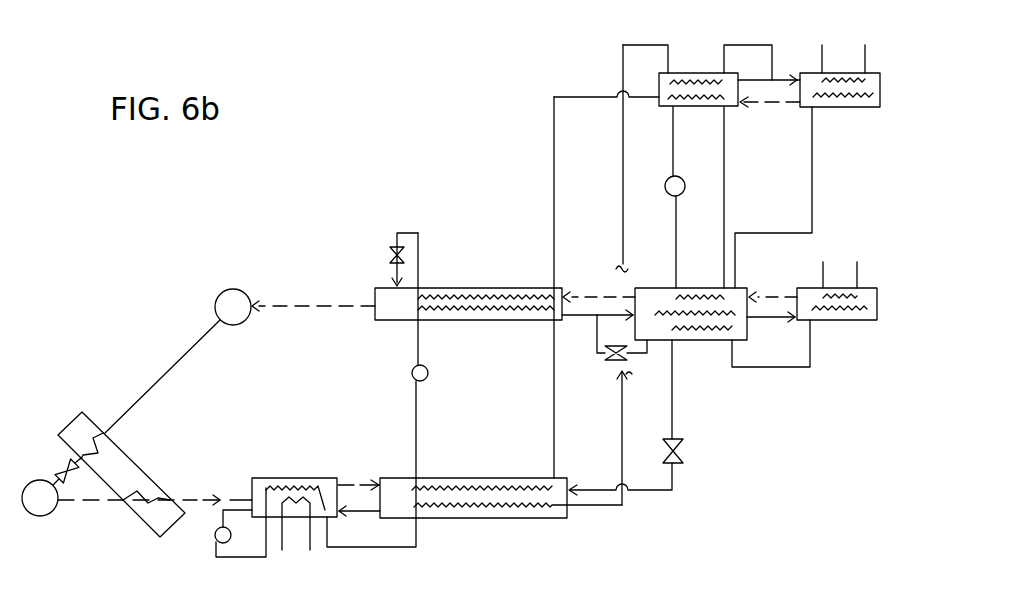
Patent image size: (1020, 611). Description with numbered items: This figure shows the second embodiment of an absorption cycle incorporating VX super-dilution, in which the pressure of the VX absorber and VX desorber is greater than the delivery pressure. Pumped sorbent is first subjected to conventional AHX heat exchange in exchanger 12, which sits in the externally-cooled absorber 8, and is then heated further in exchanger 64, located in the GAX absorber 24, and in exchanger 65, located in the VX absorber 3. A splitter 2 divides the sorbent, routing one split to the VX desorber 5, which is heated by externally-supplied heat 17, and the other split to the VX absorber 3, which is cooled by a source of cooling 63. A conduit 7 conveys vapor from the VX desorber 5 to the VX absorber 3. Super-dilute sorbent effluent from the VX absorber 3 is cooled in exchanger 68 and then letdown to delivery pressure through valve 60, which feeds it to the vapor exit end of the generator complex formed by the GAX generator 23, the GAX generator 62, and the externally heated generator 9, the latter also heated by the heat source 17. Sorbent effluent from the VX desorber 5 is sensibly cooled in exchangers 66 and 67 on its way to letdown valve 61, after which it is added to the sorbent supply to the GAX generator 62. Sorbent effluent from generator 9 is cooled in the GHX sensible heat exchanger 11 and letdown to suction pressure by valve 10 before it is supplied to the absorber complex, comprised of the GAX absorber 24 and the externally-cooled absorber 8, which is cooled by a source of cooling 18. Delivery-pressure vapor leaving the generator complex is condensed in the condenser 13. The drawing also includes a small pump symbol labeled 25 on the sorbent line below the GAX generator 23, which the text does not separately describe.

The splitter 2 is at (775, 81).
The VX absorber 3 is at (684, 107).
The VX desorber 5 is at (873, 107).
The conduit 7 is at (762, 103).
The externally-cooled absorber 8 is at (322, 478).
The externally heated generator 9 is at (863, 321).
The valve 10 is at (683, 440).
The GHX sensible heat exchanger 11 is at (843, 321).
The exchanger 12 is at (268, 485).
The condenser 13 is at (236, 290).
The externally-supplied heat 17 is at (822, 50).
The source of cooling 18 is at (283, 550).
The GAX generator 23 is at (510, 320).
The GAX absorber 24 is at (448, 478).
The pump 25 is at (428, 373).
The valve 60 is at (389, 256).
The valve 61 is at (607, 357).
The GAX generator 62 is at (695, 341).
The source of cooling 63 is at (676, 176).
The exchanger 64 is at (520, 505).
The exchanger 65 is at (683, 73).
The exchanger 66 is at (855, 107).
The exchanger 67 is at (655, 313).
The exchanger 68 is at (463, 288).